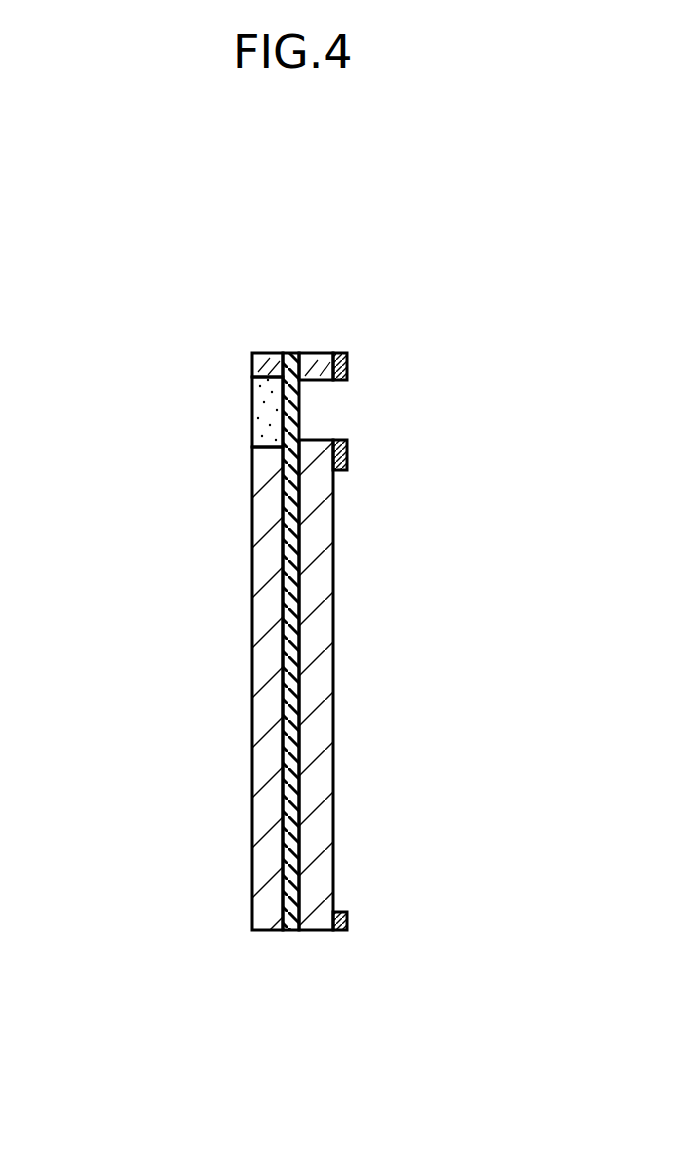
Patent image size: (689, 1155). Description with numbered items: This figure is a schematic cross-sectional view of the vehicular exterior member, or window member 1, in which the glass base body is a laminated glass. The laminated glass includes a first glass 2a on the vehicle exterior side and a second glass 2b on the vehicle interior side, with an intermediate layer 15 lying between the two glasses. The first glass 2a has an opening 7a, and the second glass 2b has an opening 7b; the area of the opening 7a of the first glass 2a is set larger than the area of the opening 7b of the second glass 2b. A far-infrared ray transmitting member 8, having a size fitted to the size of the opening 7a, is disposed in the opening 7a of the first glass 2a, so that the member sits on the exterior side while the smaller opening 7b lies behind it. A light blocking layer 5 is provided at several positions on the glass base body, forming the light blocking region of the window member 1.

The window member 1 is at (290, 285).
The first glass 2a is at (250, 772).
The second glass 2b is at (335, 753).
The light blocking layer 5 is at (347, 362).
The opening of first glass 7a is at (257, 353).
The opening of second glass 7b is at (323, 352).
The far-infrared ray transmitting member 8 is at (270, 412).
The intermediate layer 15 is at (292, 932).